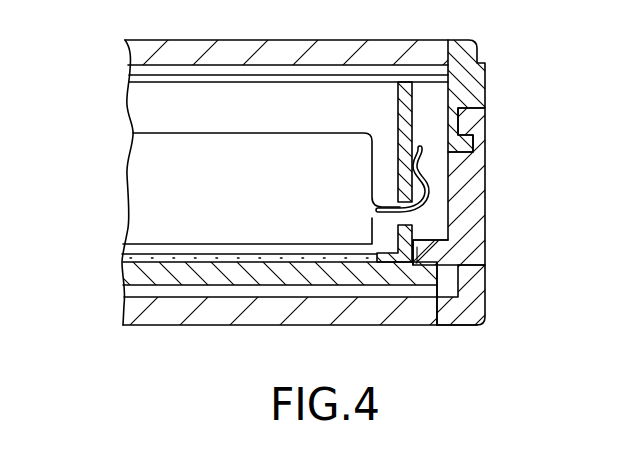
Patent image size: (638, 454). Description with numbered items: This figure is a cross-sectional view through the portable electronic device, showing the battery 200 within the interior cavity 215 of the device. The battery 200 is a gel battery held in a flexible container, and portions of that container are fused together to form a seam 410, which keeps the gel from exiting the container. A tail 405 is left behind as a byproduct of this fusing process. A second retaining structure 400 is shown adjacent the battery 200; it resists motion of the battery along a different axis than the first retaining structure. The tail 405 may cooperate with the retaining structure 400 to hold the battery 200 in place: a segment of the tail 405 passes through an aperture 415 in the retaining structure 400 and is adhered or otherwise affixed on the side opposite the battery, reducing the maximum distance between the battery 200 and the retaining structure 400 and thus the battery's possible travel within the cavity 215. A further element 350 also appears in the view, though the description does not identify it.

The battery 200 is at (343, 122).
The interior cavity 215 is at (122, 273).
The adhesive layer 350 is at (148, 261).
The second retaining structure 400 is at (457, 136).
The tail 405 is at (426, 182).
The seam 410 is at (421, 212).
The aperture 415 is at (438, 247).